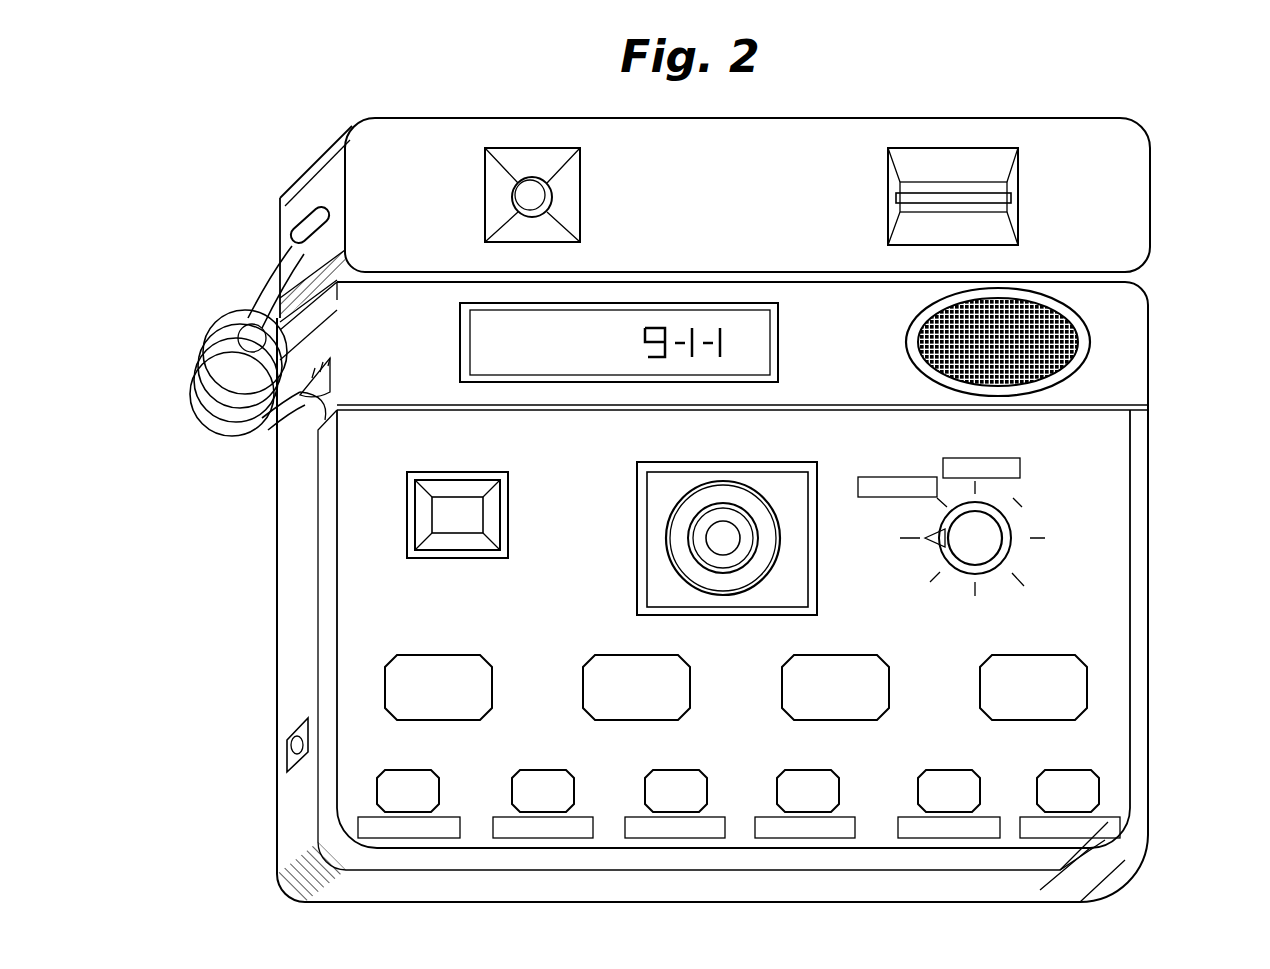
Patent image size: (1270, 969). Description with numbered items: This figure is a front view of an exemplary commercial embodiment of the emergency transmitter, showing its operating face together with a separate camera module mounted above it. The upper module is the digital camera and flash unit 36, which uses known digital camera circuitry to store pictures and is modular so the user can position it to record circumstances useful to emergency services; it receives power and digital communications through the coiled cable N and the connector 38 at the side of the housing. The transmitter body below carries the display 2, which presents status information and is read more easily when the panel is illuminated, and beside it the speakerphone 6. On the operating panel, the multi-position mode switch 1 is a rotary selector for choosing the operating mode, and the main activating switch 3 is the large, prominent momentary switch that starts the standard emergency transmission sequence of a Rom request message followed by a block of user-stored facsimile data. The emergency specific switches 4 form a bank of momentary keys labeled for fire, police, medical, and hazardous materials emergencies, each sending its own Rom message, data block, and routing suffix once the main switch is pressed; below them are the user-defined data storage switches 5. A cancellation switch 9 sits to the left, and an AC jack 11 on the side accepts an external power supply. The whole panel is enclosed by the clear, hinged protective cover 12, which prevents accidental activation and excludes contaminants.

The multi-position mode switch 1 is at (960, 556).
The display 2 is at (460, 326).
The main activating switch 3 is at (712, 538).
The emergency specific switches 4 is at (488, 660).
The user-defined data storage switches 5 is at (436, 774).
The speakerphone 6 is at (1078, 324).
The cancellation switch 9 is at (508, 500).
The AC jack 11 is at (288, 738).
The protective cover 12 is at (1150, 620).
The digital camera and flash unit 36 is at (1152, 185).
The connector 38 is at (306, 404).
The cable N is at (218, 312).